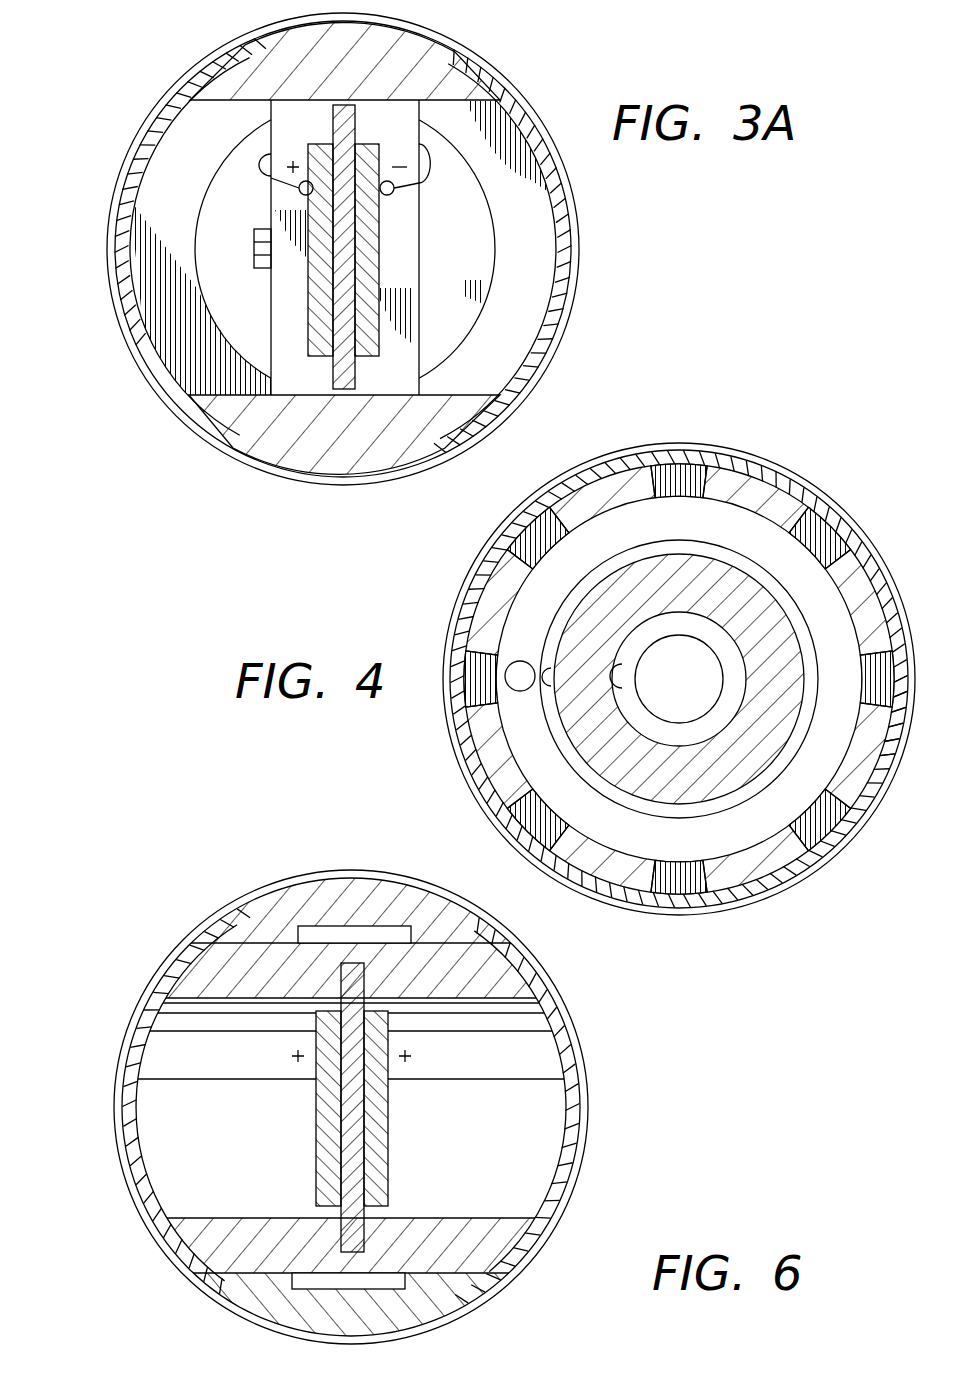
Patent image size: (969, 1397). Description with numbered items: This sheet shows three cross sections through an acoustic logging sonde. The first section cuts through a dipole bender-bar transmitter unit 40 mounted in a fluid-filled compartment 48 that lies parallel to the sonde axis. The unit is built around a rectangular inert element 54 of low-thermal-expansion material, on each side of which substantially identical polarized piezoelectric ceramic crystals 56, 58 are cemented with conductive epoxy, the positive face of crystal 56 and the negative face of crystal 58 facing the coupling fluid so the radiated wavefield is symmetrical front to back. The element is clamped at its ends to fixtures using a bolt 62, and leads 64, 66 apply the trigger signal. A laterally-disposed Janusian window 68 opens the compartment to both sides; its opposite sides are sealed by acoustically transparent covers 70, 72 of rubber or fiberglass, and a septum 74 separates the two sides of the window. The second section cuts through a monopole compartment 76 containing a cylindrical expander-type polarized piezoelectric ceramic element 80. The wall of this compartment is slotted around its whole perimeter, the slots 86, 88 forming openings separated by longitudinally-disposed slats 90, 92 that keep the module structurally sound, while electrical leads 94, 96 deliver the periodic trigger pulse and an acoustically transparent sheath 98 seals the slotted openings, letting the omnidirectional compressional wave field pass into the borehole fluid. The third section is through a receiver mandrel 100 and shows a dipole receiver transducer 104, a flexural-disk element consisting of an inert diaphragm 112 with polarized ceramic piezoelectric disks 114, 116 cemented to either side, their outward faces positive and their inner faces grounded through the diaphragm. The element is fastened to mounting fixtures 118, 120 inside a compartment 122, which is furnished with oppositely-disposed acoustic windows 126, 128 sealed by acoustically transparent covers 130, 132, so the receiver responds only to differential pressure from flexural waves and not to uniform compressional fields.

In FIG. 3A, the dipole bender-bar transmitter unit 40 is at (436, 319).
In FIG. 3A, the compartment 48 is at (537, 293).
In FIG. 3A, the inert element 54 is at (341, 225).
In FIG. 3A, the polarized piezoelectric ceramic crystal 56 is at (308, 290).
In FIG. 3A, the polarized piezoelectric ceramic crystal 58 is at (372, 243).
In FIG. 3A, the bolt 62 is at (254, 249).
In FIG. 3A, the lead 64 is at (250, 163).
In FIG. 3A, the lead 66 is at (440, 179).
In FIG. 3A, the Janusian window 68 is at (105, 350).
In FIG. 3A, the cover 70 is at (115, 282).
In FIG. 3A, the cover 72 is at (572, 315).
In FIG. 3A, the septum 74 is at (283, 462).
In FIG. 4, the compartment 76 is at (697, 531).
In FIG. 4, the cylindrical expander-type polarized piezoelectric ceramic element 80 is at (663, 778).
In FIG. 4, the slot 86 is at (827, 537).
In FIG. 4, the slot 88 is at (688, 472).
In FIG. 4, the slat 90 is at (758, 490).
In FIG. 4, the slat 92 is at (873, 597).
In FIG. 4, the electrical lead 94 is at (531, 691).
In FIG. 4, the electrical lead 96 is at (622, 678).
In FIG. 4, the acoustically transparent sheath 98 is at (462, 588).
In FIG. 6, the mandrel 100 is at (335, 883).
In FIG. 6, the dipole receiver transducer 104 is at (188, 873).
In FIG. 6, the inert diaphragm 112 is at (353, 1142).
In FIG. 6, the polarized ceramic piezoelectric disk 114 is at (325, 1157).
In FIG. 6, the polarized ceramic piezoelectric disk 116 is at (376, 1105).
In FIG. 6, the mounting fixture 118 is at (440, 984).
In FIG. 6, the mounting fixture 120 is at (432, 1228).
In FIG. 6, the compartment 122 is at (228, 1123).
In FIG. 6, the acoustic window 126 is at (100, 1053).
In FIG. 6, the acoustic window 128 is at (602, 1057).
In FIG. 6, the acoustically transparent cover 130 is at (125, 1178).
In FIG. 6, the acoustically transparent cover 132 is at (562, 1180).